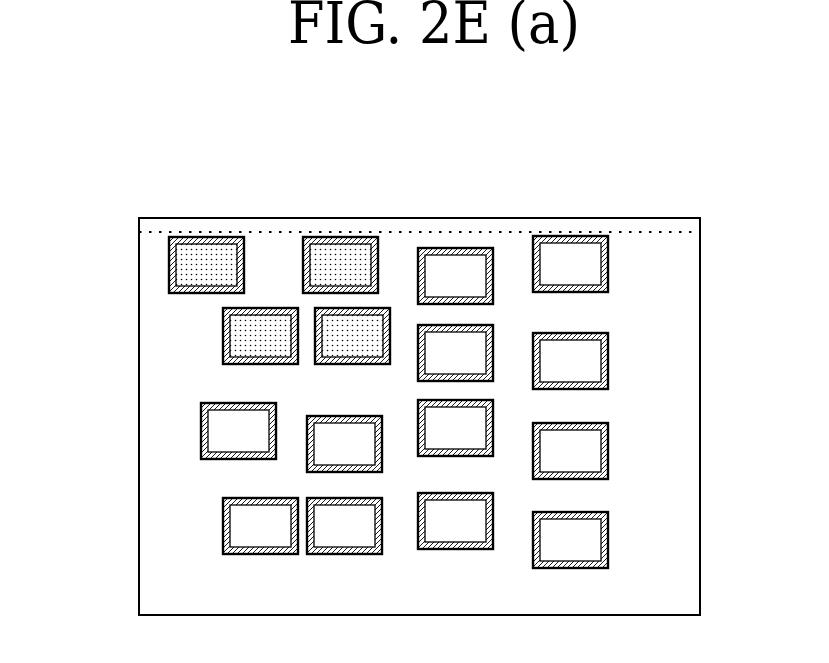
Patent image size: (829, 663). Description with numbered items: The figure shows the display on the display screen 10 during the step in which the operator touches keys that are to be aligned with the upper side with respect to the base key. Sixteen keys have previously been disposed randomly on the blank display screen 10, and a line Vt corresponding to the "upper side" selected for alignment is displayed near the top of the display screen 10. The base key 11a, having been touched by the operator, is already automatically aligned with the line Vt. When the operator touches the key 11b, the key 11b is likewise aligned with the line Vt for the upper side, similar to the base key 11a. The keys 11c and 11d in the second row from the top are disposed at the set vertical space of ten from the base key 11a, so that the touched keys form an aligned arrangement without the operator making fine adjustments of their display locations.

The display screen 10 is at (703, 523).
The line Vt is at (618, 233).
The base key 11a is at (207, 264).
The key 11b is at (337, 236).
The key 11c is at (223, 327).
The key 11d is at (343, 360).